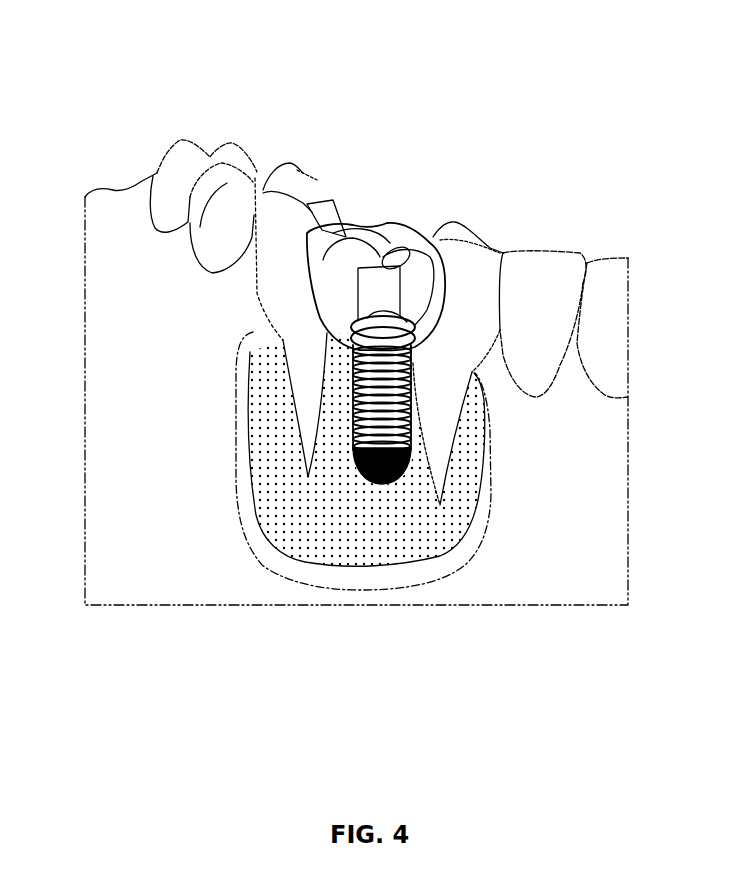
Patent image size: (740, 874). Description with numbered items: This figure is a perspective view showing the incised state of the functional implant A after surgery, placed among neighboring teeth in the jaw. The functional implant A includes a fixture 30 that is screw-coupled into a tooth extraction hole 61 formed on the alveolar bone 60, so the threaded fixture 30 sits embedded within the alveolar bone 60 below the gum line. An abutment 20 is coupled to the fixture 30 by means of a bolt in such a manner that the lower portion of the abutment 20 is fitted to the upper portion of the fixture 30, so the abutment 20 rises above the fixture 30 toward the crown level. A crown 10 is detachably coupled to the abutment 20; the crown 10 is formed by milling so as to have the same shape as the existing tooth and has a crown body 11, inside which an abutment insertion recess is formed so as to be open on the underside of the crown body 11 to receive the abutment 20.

The crown 10 is at (371, 203).
The crown body 11 is at (320, 201).
The abutment 20 is at (434, 248).
The fixture 30 is at (434, 415).
The alveolar bone 60 is at (408, 530).
The tooth extraction hole 61 is at (357, 435).
The functional implant A is at (306, 350).